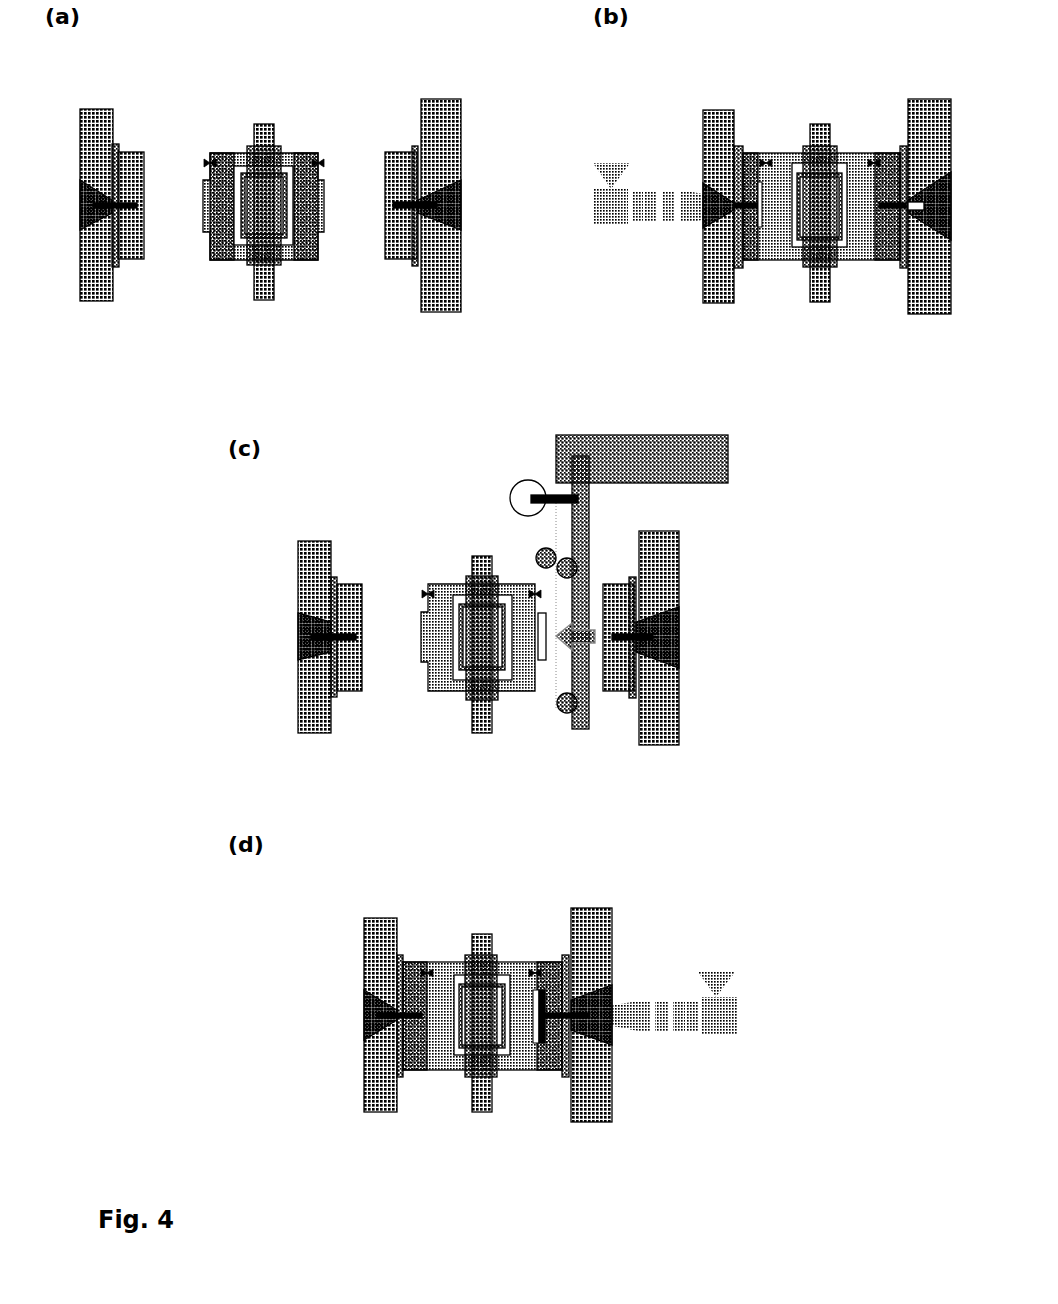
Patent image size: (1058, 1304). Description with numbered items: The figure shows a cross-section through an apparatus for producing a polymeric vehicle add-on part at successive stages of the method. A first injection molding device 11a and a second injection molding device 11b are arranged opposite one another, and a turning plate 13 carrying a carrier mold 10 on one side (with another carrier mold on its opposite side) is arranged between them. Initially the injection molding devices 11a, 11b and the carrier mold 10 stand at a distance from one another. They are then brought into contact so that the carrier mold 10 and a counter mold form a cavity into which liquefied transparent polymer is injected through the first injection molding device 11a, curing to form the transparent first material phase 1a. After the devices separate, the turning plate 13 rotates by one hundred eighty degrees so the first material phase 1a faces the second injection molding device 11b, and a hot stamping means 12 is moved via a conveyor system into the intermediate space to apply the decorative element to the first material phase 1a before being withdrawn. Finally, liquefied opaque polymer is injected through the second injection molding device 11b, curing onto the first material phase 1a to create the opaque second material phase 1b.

The first material phase 1a is at (764, 237).
The second material phase 1b is at (544, 1043).
The carrier mold 10 is at (224, 160).
The first injection molding device 11a is at (105, 118).
The second injection molding device 11b is at (432, 110).
The hot stamping means 12 is at (611, 462).
The turning plate 13 is at (262, 127).